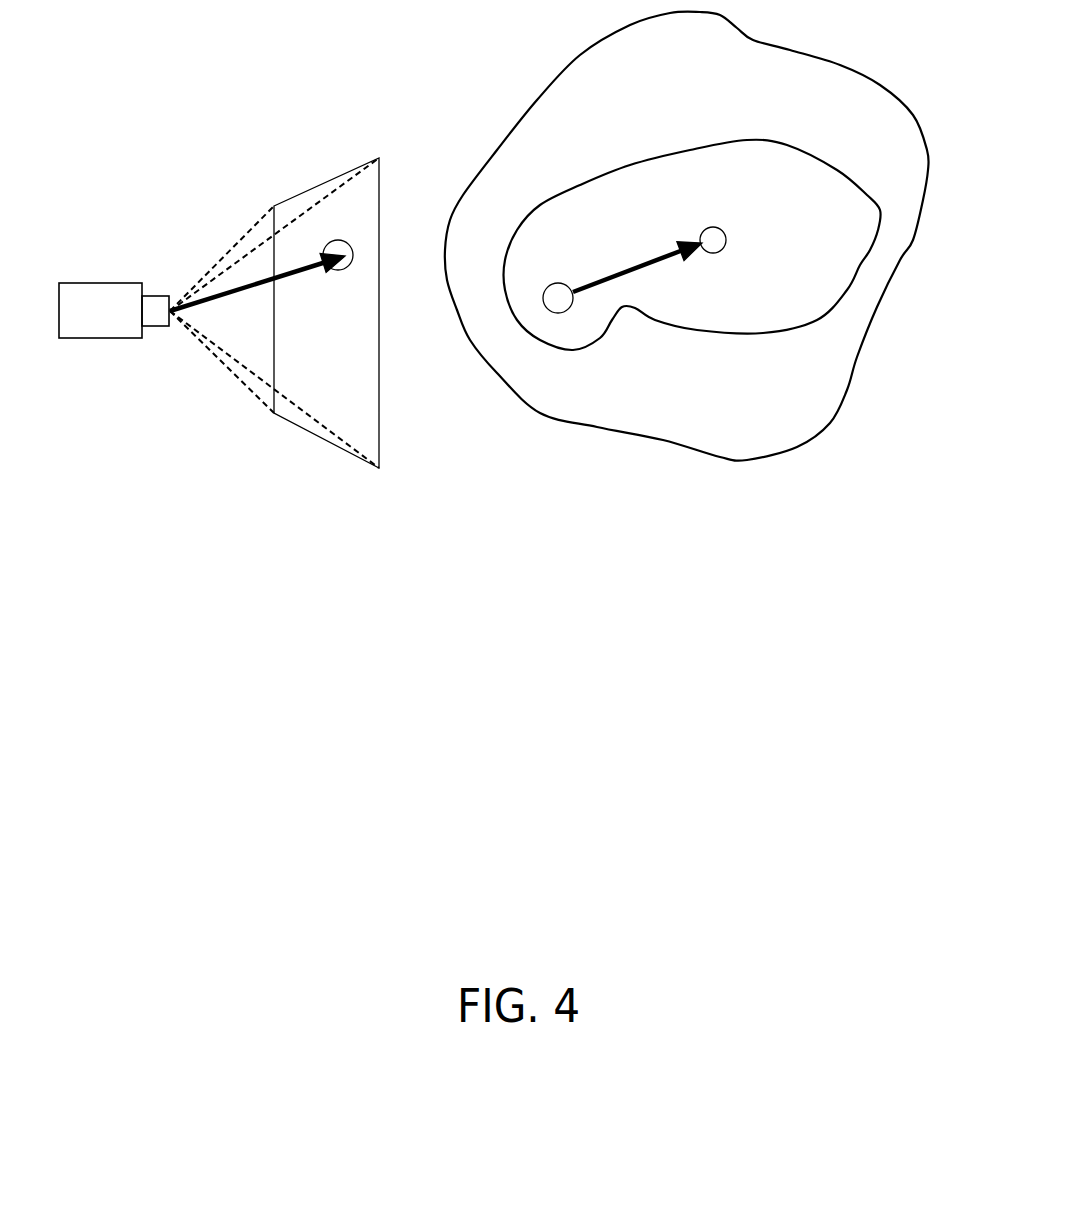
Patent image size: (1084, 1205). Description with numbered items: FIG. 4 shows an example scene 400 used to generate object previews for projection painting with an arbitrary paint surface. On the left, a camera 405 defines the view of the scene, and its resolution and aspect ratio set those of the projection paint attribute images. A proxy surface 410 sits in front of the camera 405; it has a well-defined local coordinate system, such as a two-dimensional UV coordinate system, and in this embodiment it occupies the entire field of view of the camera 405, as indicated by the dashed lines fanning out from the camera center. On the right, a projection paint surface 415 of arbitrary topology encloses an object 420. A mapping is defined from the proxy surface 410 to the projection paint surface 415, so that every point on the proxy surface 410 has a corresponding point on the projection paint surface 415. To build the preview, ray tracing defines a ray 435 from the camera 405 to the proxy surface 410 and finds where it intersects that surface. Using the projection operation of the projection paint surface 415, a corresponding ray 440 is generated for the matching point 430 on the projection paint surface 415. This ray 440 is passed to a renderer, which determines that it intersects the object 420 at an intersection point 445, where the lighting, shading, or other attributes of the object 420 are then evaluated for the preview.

The example scene 400 is at (175, 588).
The camera 405 is at (116, 303).
The proxy surface 410 is at (349, 458).
The projection paint surface 415 is at (720, 453).
The object 420 is at (350, 250).
The point on projection paint surface 430 is at (558, 302).
The ray 435 is at (280, 277).
The ray 440 is at (653, 267).
The intersection point 445 is at (713, 242).